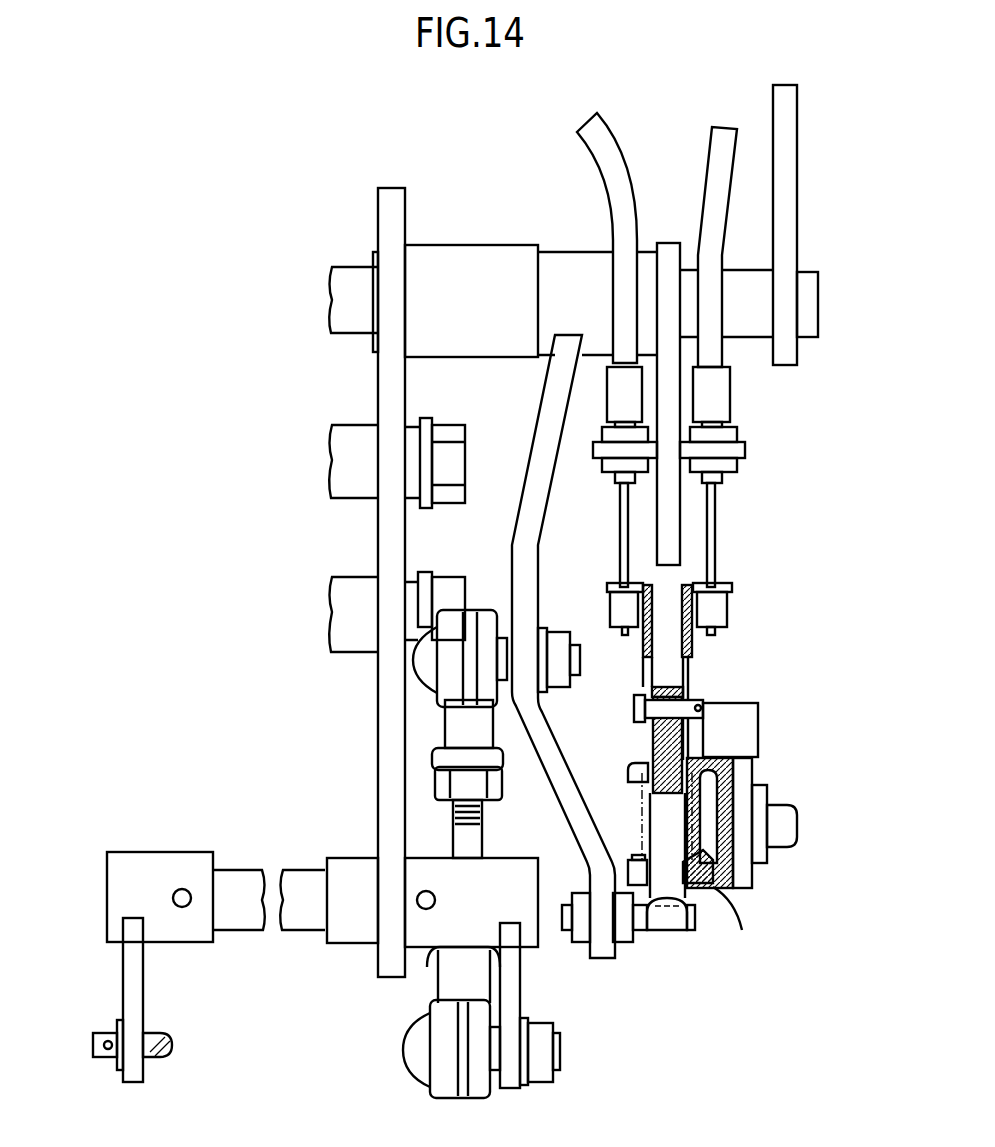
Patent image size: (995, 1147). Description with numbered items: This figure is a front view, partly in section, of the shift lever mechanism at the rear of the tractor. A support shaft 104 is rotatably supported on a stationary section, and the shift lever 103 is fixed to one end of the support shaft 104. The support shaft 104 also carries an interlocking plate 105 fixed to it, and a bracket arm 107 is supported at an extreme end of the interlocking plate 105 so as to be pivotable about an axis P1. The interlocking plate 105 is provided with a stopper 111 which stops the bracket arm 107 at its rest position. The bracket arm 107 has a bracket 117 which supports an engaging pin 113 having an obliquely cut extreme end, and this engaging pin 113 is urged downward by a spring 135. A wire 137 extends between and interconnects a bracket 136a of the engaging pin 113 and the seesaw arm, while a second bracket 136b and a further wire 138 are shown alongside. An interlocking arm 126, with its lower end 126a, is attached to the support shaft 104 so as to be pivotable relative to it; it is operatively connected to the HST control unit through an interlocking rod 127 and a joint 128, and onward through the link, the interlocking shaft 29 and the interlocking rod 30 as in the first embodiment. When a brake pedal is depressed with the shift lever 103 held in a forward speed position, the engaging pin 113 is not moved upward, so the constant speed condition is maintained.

The interlocking shaft 29 is at (252, 922).
The interlocking rod 30 is at (173, 1045).
The shift lever 103 is at (772, 100).
The support shaft 104 is at (752, 337).
The interlocking plate 105 is at (672, 528).
The bracket arm 107 is at (747, 887).
The stopper 111 is at (750, 743).
The engaging pin 113 is at (688, 752).
The bracket 117 is at (710, 883).
The interlocking arm 126 is at (512, 543).
The ball end 126a is at (703, 923).
The interlocking rod 127 is at (473, 835).
The ball joint 128 is at (512, 998).
The spring 135 is at (640, 788).
The bracket 136a is at (688, 650).
The bracket wall 136b is at (642, 640).
The wire 137 is at (710, 140).
The cable 138 is at (602, 170).
The axis P1 is at (740, 823).